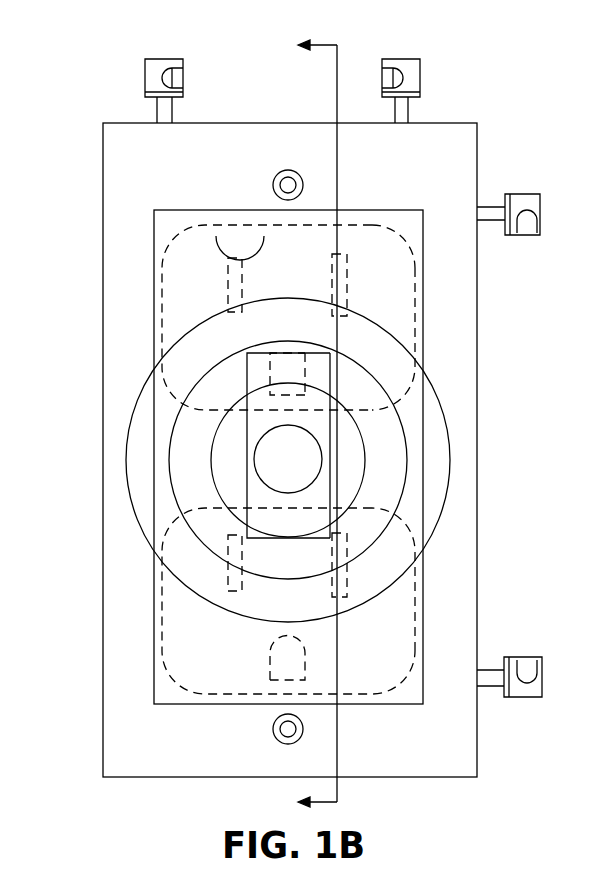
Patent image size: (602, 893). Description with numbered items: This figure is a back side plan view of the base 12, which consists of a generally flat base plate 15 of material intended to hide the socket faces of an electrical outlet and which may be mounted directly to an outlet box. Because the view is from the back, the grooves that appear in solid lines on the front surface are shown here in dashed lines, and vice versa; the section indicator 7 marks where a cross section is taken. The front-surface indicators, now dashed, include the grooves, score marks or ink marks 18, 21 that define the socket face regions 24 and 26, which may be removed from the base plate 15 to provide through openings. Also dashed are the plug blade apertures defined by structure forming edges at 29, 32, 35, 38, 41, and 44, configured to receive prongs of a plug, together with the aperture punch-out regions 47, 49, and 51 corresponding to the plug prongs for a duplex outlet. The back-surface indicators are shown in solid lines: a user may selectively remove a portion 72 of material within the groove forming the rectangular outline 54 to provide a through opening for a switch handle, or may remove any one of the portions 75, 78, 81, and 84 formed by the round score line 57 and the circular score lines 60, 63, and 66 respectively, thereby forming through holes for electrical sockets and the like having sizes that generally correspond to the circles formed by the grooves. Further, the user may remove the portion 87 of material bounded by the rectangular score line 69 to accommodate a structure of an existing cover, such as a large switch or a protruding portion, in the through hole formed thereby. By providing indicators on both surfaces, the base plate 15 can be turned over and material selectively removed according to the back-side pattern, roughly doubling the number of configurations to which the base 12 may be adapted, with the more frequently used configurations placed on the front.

The base 12 is at (509, 139).
The base plate 15 is at (460, 143).
The section line 7 is at (309, 422).
The groove, score mark or ink mark 18 is at (401, 248).
The groove, score mark or ink mark 21 is at (413, 637).
The socket face region 24 is at (384, 264).
The socket face region 26 is at (398, 608).
The plug blade aperture edge 29 is at (264, 236).
The plug blade aperture edge 32 is at (348, 270).
The plug blade aperture edge 35 is at (270, 368).
The plug blade aperture edge 38 is at (228, 575).
The plug blade aperture edge 41 is at (348, 570).
The plug blade aperture edge 44 is at (267, 660).
The aperture punch-out region 47 is at (216, 236).
The aperture punch-out region 49 is at (348, 279).
The aperture punch-out region 51 is at (300, 370).
The rectangular score line 54 is at (332, 373).
The round score line 57 is at (313, 490).
The circular score line 60 is at (400, 487).
The circular score line 63 is at (408, 452).
The circular score line 66 is at (443, 405).
The rectangular score line 69 is at (425, 677).
The portion of material 72 is at (250, 368).
The portion of material 75 is at (285, 437).
The portion of material 78 is at (220, 445).
The portion of material 81 is at (177, 463).
The portion of material 84 is at (143, 503).
The portion of material 87 is at (168, 236).